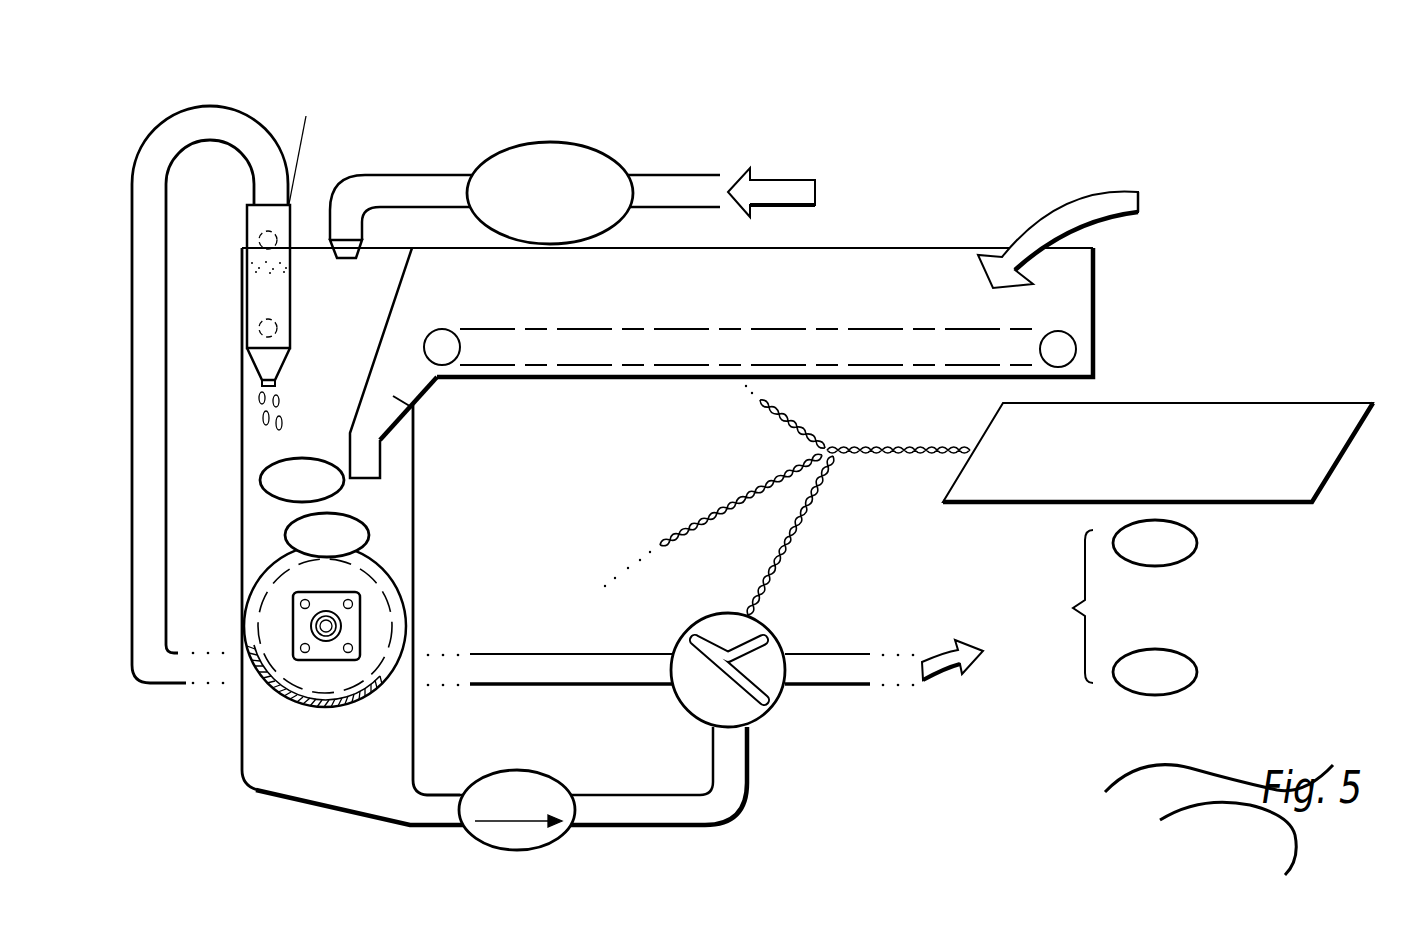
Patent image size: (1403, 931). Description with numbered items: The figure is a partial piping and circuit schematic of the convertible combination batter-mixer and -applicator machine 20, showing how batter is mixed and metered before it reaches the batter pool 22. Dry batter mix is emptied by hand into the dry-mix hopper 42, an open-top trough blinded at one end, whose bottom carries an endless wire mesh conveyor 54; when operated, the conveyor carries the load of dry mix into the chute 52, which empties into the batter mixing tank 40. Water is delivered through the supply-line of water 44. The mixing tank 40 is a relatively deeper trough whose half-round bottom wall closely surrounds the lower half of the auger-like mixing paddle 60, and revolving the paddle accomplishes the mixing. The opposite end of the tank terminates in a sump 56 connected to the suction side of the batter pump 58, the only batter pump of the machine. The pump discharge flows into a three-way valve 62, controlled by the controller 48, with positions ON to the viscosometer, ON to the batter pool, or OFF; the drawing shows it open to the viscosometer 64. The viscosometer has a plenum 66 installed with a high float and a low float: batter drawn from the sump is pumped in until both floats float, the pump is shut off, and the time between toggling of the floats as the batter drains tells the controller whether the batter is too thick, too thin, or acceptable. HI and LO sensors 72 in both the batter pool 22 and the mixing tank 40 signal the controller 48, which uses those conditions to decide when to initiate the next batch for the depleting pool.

The convertible combination batter-mixer and -applicator machine 20 is at (907, 100).
The batter tank or pool 22 is at (1022, 660).
The batter mixing tank 40 is at (253, 447).
The dry-mix hopper 42 is at (1078, 287).
The supply-line of water 44 is at (662, 185).
The controller 48 is at (1287, 417).
The chute 52 is at (413, 415).
The endless wire mesh conveyor 54 is at (750, 312).
The sump 56 is at (267, 743).
The batter pump 58 is at (528, 773).
The auger-like mixing paddle 60 is at (387, 572).
The three-way valve 62 is at (698, 698).
The viscosometer 64 is at (252, 217).
The plenum 66 is at (293, 309).
The HI and LO sensors 72 is at (295, 538).